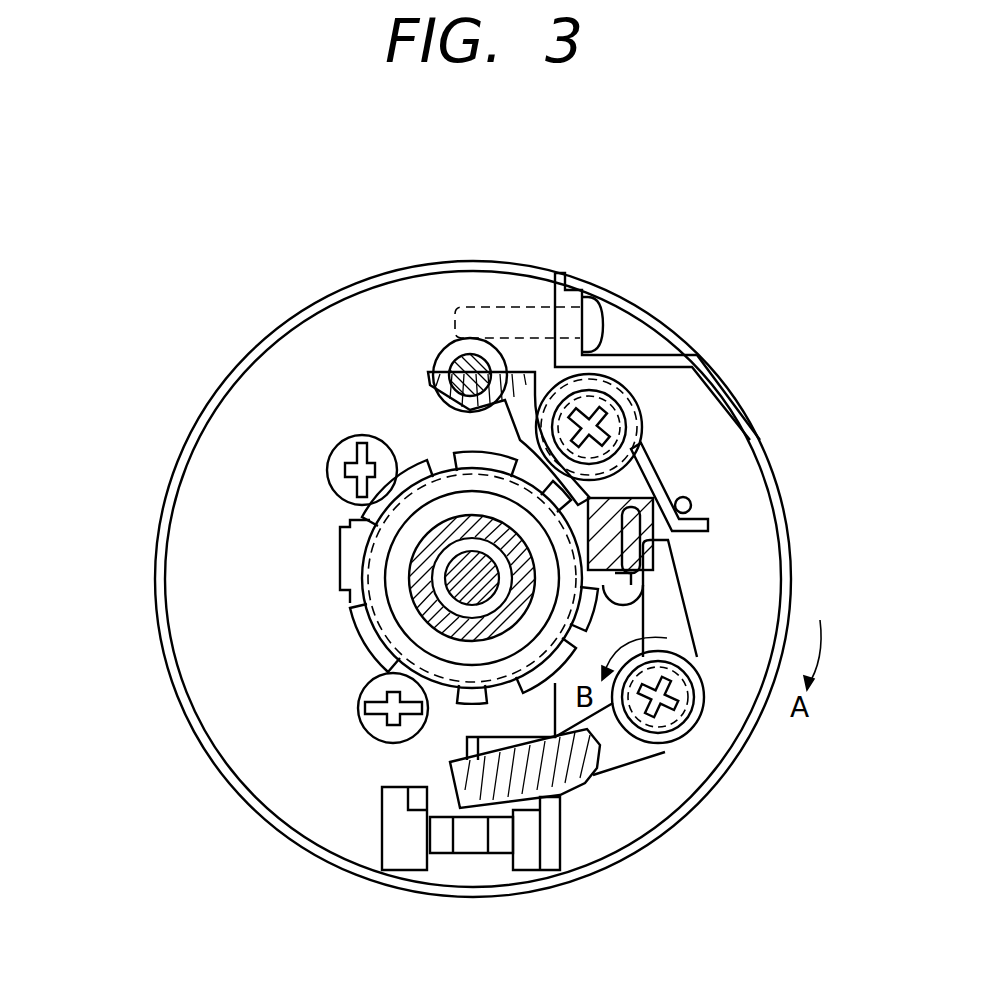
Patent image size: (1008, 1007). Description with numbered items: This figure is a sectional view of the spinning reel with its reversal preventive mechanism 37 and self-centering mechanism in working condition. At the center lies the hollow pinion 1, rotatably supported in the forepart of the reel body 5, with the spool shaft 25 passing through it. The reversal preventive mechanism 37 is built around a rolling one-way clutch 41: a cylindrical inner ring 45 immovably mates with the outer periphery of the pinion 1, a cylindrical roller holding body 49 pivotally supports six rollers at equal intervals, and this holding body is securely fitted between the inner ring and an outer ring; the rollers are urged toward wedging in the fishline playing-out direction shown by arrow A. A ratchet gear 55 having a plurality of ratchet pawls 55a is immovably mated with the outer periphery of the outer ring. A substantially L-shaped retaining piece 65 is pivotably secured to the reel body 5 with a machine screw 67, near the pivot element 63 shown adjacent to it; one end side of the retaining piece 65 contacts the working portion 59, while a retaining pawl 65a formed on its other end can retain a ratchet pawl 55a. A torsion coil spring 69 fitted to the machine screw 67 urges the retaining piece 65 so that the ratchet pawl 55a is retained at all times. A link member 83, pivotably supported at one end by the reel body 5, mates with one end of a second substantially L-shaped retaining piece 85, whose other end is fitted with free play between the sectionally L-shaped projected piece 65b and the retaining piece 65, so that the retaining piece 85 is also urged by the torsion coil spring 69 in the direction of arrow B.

The hollow pinion 1 is at (433, 642).
The reel body 5 is at (155, 586).
The spool shaft 25 is at (443, 600).
The reversal preventive mechanism 37 is at (330, 525).
The one-way clutch 41 is at (383, 573).
The cylindrical inner ring 45 is at (410, 463).
The cylindrical roller holding body 49 is at (377, 703).
The ratchet gear 55 is at (432, 560).
The ratchet pawl 55a is at (352, 555).
The working portion 59 is at (478, 412).
The pivot pin 63 is at (470, 370).
The retaining piece 65 is at (535, 375).
The retaining pawl 65a is at (642, 480).
The projected piece 65b is at (660, 555).
The machine screw 67 is at (602, 402).
The torsion coil spring 69 is at (652, 495).
The link member 83 is at (475, 807).
The retaining piece 85 is at (620, 758).